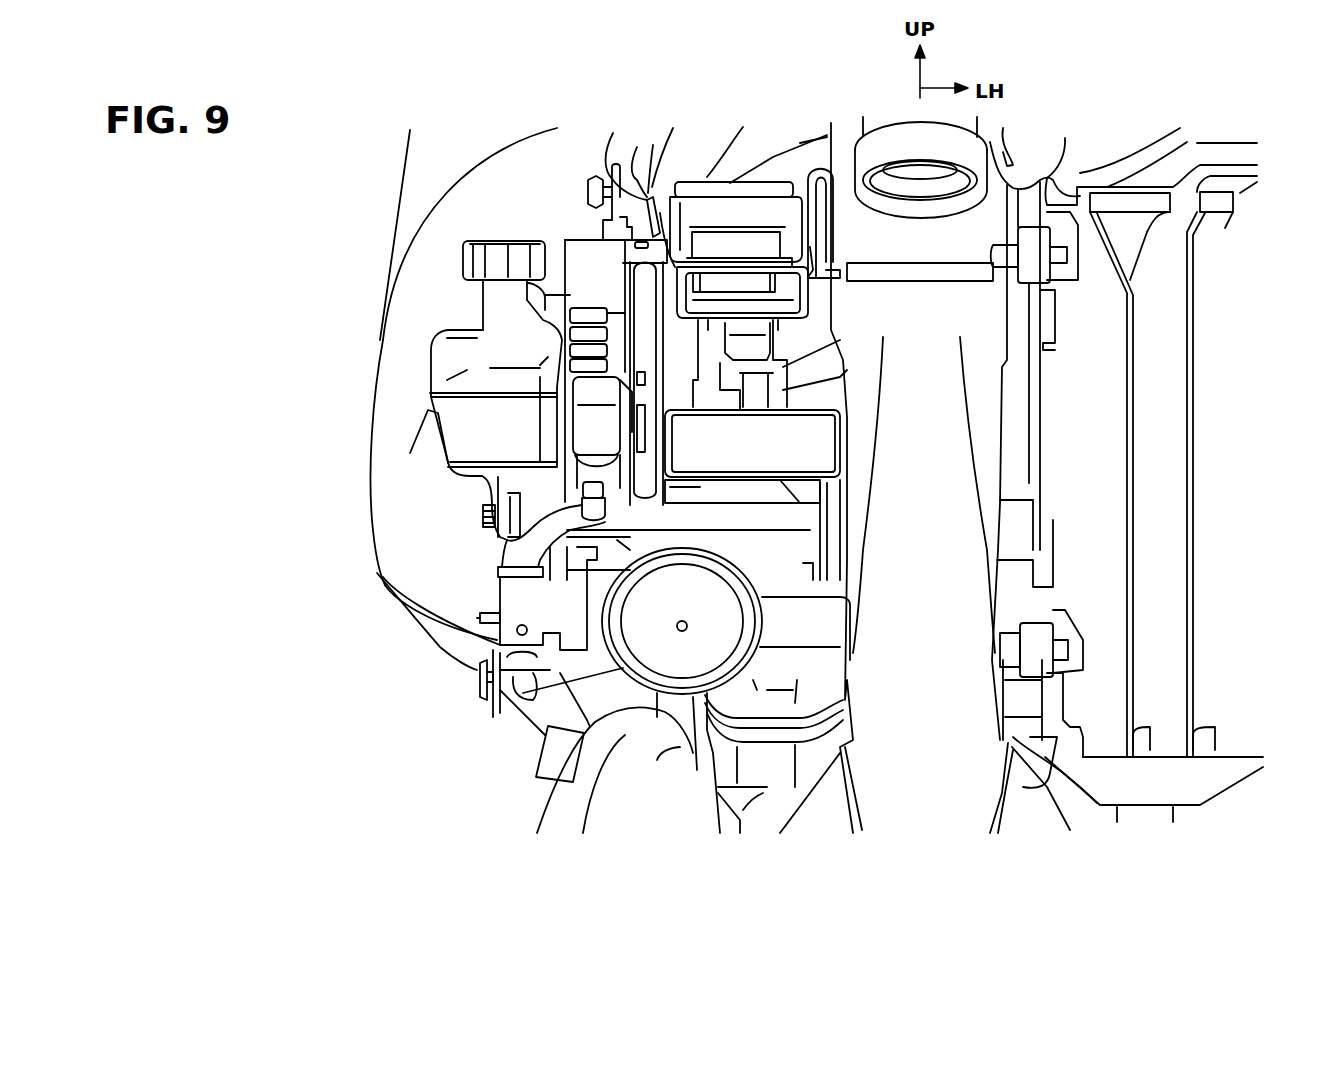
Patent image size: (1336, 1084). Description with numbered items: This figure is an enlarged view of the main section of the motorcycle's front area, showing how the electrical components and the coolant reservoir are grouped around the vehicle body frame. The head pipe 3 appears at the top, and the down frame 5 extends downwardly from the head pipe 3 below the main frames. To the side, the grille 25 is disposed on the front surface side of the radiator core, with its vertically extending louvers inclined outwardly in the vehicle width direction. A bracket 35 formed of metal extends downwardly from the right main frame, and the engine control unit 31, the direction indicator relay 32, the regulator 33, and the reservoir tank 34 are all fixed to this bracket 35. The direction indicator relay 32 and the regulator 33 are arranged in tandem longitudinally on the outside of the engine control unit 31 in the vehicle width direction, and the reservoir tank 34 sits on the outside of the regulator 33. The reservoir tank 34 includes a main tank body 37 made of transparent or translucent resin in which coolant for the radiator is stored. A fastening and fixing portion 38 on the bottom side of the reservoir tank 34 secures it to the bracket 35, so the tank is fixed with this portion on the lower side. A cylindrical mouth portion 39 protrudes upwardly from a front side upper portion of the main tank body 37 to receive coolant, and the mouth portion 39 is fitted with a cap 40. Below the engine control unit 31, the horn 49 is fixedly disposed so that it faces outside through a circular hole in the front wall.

The head pipe 3 is at (888, 112).
The down frame 5 is at (1100, 533).
The grille 25 is at (1180, 373).
The engine control unit (ECU) 31 is at (740, 210).
The direction indicator relay 32 is at (590, 427).
The regulator 33 is at (583, 257).
The reservoir tank 34 is at (418, 336).
The bracket 35 is at (653, 207).
The main tank body 37 is at (420, 363).
The fastening and fixing portion 38 is at (482, 513).
The mouth portion 39 is at (490, 300).
The cap 40 is at (507, 237).
The horn 49 is at (640, 640).